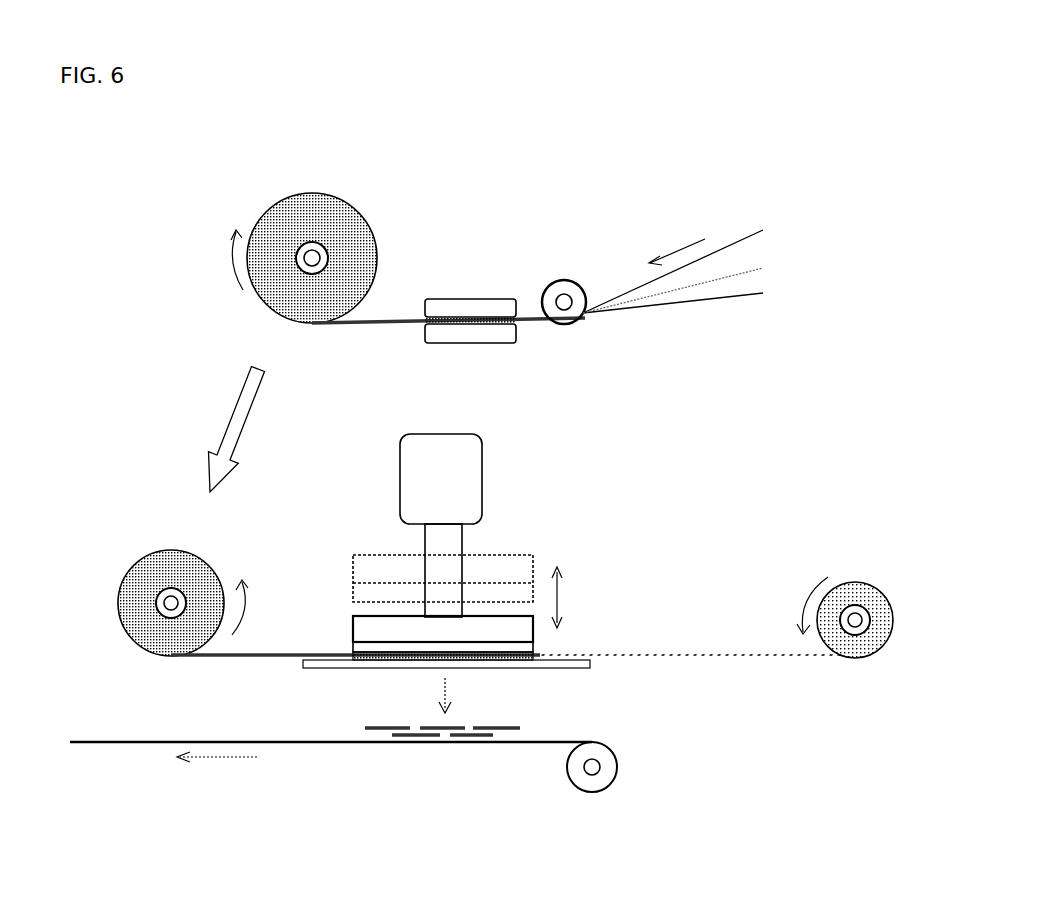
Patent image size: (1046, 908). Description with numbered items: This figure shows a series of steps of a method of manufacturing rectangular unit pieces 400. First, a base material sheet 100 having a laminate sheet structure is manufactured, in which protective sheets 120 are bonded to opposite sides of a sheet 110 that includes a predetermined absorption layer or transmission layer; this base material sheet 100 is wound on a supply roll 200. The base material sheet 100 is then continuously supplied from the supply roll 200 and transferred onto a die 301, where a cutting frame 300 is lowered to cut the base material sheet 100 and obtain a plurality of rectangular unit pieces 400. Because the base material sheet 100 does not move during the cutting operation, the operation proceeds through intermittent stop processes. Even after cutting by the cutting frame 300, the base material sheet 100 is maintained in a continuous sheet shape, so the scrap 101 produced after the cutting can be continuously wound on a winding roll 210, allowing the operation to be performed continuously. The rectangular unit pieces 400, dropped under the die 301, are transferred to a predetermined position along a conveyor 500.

The base material sheet 100 is at (383, 317).
The scrap 101 is at (650, 655).
The sheet 110 is at (760, 268).
The protective sheets 120 is at (738, 238).
The supply roll 200 is at (348, 200).
The winding roll 210 is at (857, 582).
The cutting frame 300 is at (507, 555).
The die 301 is at (570, 668).
The rectangular unit pieces 400 is at (381, 730).
The conveyor 500 is at (257, 741).